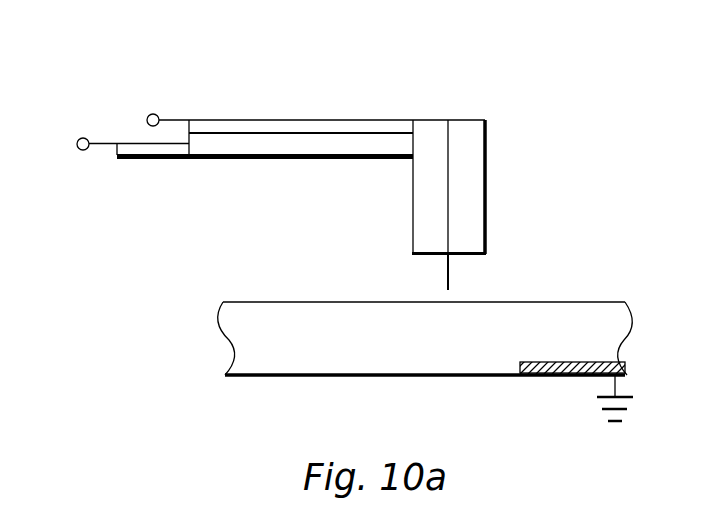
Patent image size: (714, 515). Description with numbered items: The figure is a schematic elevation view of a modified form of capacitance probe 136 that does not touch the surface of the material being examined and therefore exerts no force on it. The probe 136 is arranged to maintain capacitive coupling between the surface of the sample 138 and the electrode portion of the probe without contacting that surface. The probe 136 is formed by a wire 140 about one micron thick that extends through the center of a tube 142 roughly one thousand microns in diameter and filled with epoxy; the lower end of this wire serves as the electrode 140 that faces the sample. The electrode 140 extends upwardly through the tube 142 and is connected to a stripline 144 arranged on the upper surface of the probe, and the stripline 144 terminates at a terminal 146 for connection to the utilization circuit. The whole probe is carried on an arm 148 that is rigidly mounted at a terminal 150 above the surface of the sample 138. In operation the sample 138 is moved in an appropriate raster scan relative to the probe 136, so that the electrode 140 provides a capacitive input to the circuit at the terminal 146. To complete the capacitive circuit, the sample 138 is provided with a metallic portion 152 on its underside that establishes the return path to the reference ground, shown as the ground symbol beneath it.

The probe 136 is at (457, 86).
The sample 138 is at (578, 308).
The wire 140 is at (452, 278).
The tube 142 is at (477, 162).
The stripline 144 is at (289, 120).
The terminal 146 is at (149, 116).
The arm 148 is at (237, 159).
The terminal 150 is at (78, 149).
The metallic portion 152 is at (558, 376).